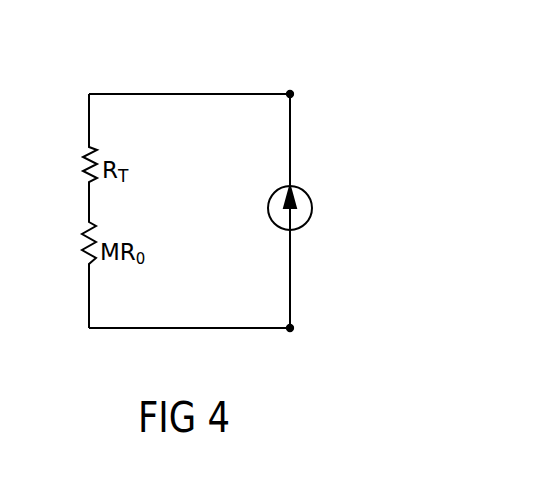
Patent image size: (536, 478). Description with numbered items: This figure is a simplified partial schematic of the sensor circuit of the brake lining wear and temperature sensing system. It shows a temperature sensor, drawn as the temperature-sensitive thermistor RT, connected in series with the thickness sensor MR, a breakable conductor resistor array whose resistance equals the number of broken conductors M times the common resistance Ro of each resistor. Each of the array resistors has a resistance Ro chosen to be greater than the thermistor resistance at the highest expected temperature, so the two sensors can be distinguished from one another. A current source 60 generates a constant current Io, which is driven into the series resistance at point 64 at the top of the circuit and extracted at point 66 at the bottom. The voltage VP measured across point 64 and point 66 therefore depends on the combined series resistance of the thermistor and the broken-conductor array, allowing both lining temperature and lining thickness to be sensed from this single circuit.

The current source 60 is at (305, 190).
The point 64 is at (291, 94).
The point 66 is at (291, 328).